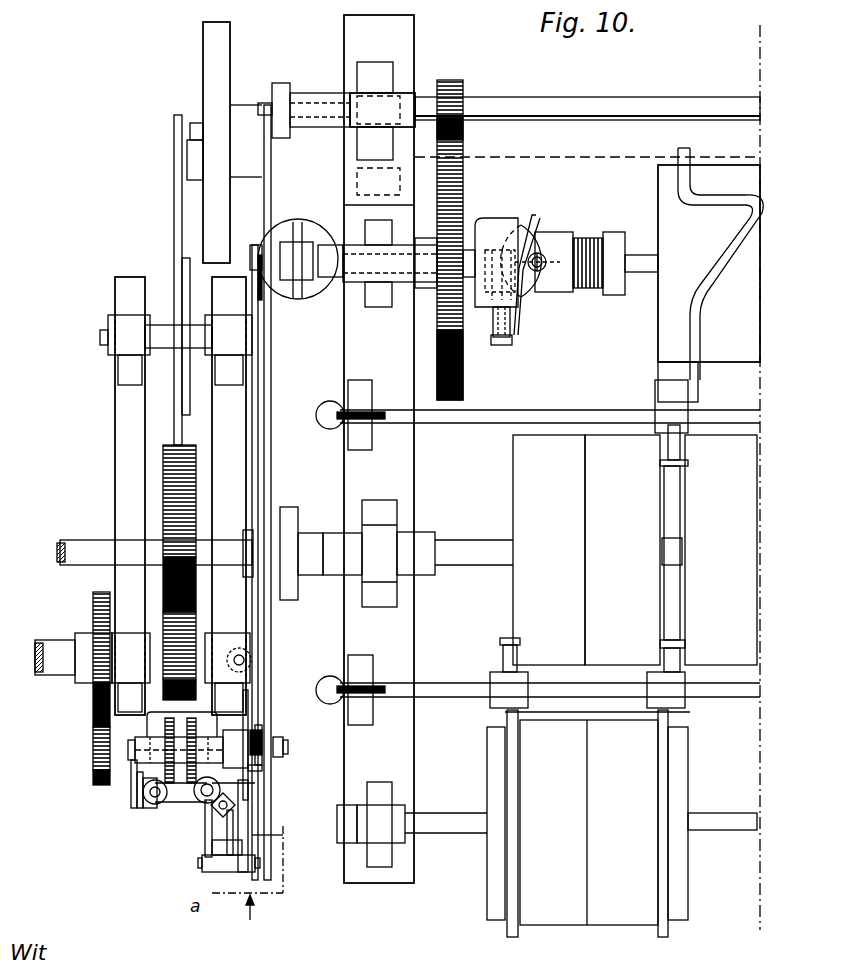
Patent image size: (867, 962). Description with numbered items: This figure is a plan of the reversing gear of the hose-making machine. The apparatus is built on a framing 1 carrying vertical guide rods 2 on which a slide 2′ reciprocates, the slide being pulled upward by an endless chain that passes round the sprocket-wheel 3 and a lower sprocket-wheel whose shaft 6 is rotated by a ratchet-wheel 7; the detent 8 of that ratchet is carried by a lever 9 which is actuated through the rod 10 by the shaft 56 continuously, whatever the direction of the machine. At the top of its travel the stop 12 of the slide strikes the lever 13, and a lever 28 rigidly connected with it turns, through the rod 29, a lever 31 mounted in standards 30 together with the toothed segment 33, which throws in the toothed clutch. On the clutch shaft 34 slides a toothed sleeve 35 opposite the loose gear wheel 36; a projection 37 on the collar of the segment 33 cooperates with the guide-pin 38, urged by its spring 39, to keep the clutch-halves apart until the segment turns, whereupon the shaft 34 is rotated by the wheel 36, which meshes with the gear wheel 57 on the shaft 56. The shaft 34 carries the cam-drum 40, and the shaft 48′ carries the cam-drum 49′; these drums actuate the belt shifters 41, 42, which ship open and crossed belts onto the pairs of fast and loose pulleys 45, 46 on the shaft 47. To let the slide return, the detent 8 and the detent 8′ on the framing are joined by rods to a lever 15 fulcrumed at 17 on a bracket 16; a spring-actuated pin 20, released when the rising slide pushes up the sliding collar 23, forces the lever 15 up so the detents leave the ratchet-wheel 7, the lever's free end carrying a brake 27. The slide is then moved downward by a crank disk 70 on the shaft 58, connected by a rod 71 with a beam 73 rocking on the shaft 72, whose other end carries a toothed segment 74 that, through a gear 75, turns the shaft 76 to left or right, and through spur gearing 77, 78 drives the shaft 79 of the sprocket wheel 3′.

The framing 1 is at (120, 520).
The vertical guide rods 2 is at (155, 804).
The slide 2′ is at (200, 800).
The sprocket-wheel 3 is at (215, 768).
The sprocket wheel 3′ is at (131, 790).
The shaft 6 is at (288, 748).
The ratchet-wheel 7 is at (255, 783).
The detent 8 is at (262, 768).
The detent 8′ is at (255, 715).
The lever 9 is at (283, 742).
The rod 10 is at (270, 662).
The stop 12 is at (150, 784).
The lever 13 is at (140, 808).
The lever 15 is at (262, 850).
The bracket 16 is at (236, 868).
The fulcrum 17 is at (200, 866).
The spring-actuated pin 20 is at (205, 825).
The sliding collar 23 is at (238, 806).
The brake 27 is at (246, 655).
The lever 28 is at (262, 735).
The rod 29 is at (268, 455).
The standards 30 is at (322, 296).
The lever 31 is at (282, 232).
The toothed segment 33 is at (502, 345).
The shaft 34 is at (645, 274).
The toothed sleeve 35 is at (560, 234).
The gear wheel 36 is at (466, 388).
The projection 37 is at (522, 268).
The guide-pin 38 is at (545, 270).
The spring 39 is at (590, 236).
The cam-drum 40 is at (735, 360).
The belt shifters 41 is at (676, 466).
The belt shifters 42 is at (672, 644).
The fast and loose pulleys 45 is at (528, 566).
The fast and loose pulleys 46 is at (746, 632).
The shaft 47 is at (460, 546).
The shaft 48′ is at (462, 828).
The cam-drum 49′ is at (618, 916).
The shaft 56 is at (312, 105).
The gear wheel 57 is at (450, 85).
The shaft 58 is at (540, 128).
The crank disk 70 is at (225, 45).
The rod 71 is at (193, 134).
The shaft 72 is at (165, 345).
The beam 73 is at (176, 220).
The toothed segment 74 is at (170, 462).
The gear 75 is at (196, 620).
The shaft 76 is at (62, 662).
The spur gearing 77 is at (92, 690).
The spur gearing 78 is at (92, 770).
The shaft 79 is at (128, 750).